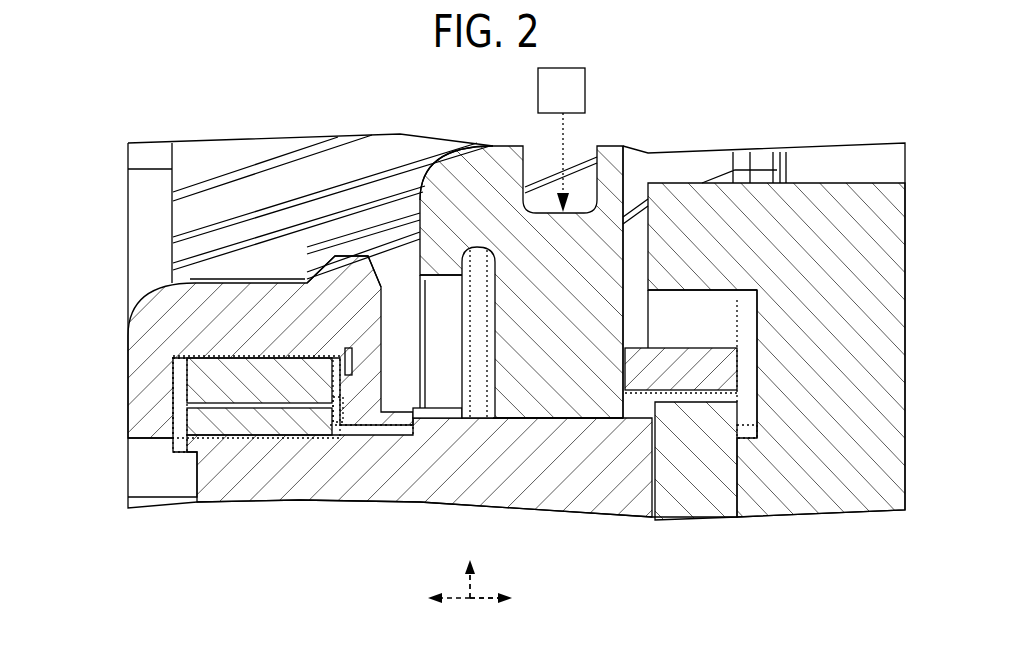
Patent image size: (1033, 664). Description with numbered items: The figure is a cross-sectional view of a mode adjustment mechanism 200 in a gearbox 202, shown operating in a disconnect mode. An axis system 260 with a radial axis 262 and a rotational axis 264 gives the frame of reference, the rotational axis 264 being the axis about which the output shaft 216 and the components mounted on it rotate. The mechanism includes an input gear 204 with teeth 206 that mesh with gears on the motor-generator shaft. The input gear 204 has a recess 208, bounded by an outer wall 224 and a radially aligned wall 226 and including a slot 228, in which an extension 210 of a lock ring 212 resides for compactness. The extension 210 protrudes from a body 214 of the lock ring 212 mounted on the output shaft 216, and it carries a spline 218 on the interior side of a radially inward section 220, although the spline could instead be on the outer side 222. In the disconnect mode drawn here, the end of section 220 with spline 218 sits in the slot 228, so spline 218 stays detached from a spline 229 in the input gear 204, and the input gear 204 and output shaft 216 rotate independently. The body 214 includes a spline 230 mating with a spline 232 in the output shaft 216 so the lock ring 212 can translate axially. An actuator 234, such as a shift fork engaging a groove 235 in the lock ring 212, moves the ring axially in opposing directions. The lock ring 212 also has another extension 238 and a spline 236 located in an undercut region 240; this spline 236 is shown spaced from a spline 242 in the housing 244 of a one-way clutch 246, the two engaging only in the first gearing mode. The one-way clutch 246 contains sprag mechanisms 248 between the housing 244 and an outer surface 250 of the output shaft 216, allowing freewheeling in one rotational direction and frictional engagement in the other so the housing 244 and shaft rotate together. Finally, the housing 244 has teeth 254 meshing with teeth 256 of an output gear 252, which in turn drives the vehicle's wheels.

The mode adjustment mechanism 200 is at (128, 118).
The gearbox 202 is at (276, 194).
The input gear 204 is at (880, 168).
The teeth 206 is at (827, 183).
The recess 208 is at (654, 316).
The extension 210 is at (722, 325).
The lock ring 212 is at (418, 147).
The body 214 is at (541, 324).
The output shaft 216 is at (482, 477).
The spline 218 is at (744, 440).
The section 220 is at (772, 390).
The outer side 222 is at (772, 348).
The outer wall 224 is at (676, 293).
The radially aligned wall 226 is at (716, 338).
The slot 228 is at (772, 432).
The spline 229 is at (682, 410).
The spline 230 is at (596, 418).
The spline 232 is at (453, 410).
The actuator 234 is at (588, 95).
The groove 235 is at (541, 161).
The spline 236 is at (446, 277).
The extension 238 is at (399, 212).
The undercut region 240 is at (448, 339).
The spline 242 is at (357, 258).
The housing 244 is at (244, 336).
The one-way clutch 246 is at (217, 267).
The sprag mechanisms 248 is at (245, 394).
The outer surface 250 is at (373, 427).
The output gear 252 is at (126, 203).
The teeth 254 is at (156, 446).
The teeth 256 is at (140, 440).
The axis system 260 is at (500, 583).
The radial axis 262 is at (462, 592).
The rotational axis 264 is at (482, 602).